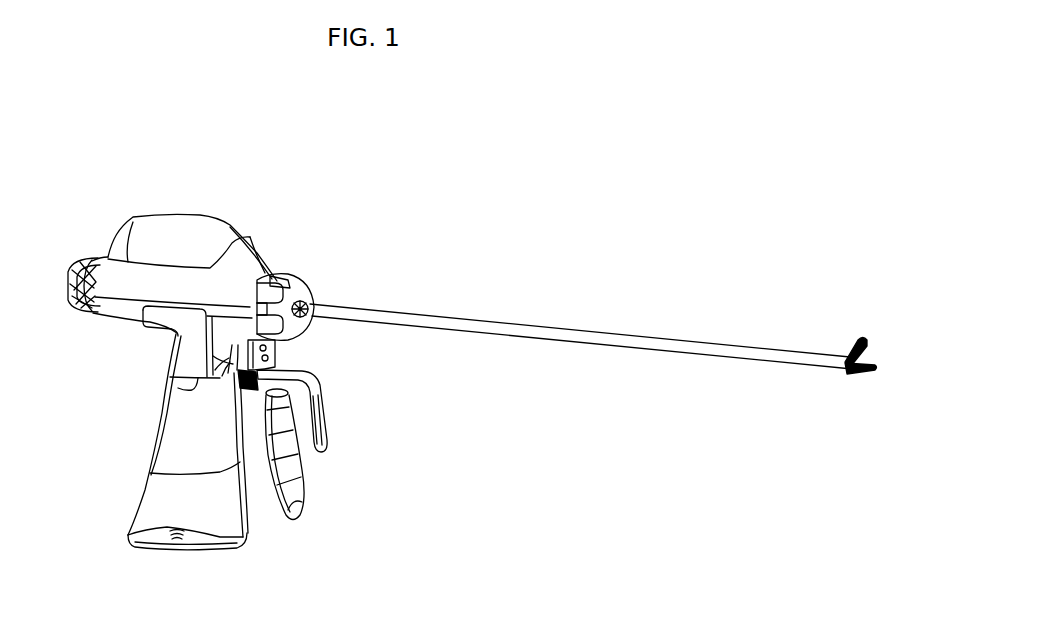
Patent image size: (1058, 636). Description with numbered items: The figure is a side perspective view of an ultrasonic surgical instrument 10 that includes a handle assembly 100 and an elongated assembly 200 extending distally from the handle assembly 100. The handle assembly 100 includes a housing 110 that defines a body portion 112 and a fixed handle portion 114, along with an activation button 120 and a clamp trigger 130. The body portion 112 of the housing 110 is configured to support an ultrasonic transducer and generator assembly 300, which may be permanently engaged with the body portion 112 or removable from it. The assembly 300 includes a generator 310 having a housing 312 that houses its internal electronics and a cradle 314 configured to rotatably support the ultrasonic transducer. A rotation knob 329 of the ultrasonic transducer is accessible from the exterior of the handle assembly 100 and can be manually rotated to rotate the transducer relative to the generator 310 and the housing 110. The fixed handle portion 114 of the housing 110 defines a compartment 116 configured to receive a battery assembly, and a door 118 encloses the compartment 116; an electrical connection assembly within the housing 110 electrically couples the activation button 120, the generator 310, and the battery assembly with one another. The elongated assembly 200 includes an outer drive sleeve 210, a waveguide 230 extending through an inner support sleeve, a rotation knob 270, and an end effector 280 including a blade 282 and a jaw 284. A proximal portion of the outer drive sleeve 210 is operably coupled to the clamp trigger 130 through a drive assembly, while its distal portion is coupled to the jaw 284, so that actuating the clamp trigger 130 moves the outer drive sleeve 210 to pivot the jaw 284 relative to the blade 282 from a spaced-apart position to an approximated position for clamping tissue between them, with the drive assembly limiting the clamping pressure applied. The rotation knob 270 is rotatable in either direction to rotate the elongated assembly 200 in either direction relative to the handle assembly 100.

The ultrasonic surgical instrument 10 is at (533, 213).
The handle assembly 100 is at (183, 176).
The housing 110 is at (175, 332).
The body portion 112 is at (127, 303).
The fixed handle portion 114 is at (155, 492).
The compartment 116 is at (175, 502).
The door 118 is at (204, 549).
The activation button 120 is at (280, 360).
The clamp trigger 130 is at (299, 484).
The elongated assembly 200 is at (528, 298).
The outer drive sleeve 210 is at (460, 330).
The waveguide 230 is at (874, 371).
The rotation knob 270 is at (293, 284).
The end effector 280 is at (910, 313).
The blade 282 is at (872, 368).
The jaw 284 is at (857, 350).
The ultrasonic transducer and generator assembly 300 is at (203, 248).
The generator 310 is at (183, 237).
The housing 312 is at (147, 240).
The cradle 314 is at (91, 262).
The rotation knob 329 is at (73, 293).